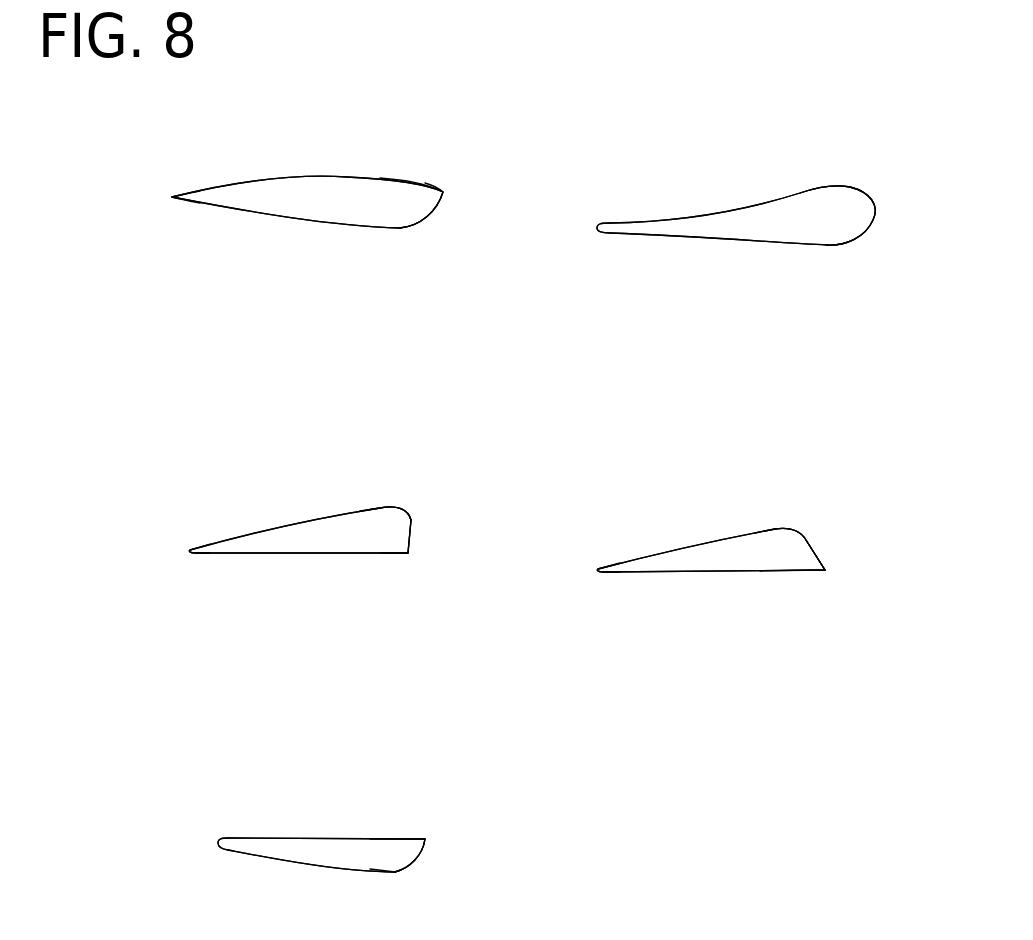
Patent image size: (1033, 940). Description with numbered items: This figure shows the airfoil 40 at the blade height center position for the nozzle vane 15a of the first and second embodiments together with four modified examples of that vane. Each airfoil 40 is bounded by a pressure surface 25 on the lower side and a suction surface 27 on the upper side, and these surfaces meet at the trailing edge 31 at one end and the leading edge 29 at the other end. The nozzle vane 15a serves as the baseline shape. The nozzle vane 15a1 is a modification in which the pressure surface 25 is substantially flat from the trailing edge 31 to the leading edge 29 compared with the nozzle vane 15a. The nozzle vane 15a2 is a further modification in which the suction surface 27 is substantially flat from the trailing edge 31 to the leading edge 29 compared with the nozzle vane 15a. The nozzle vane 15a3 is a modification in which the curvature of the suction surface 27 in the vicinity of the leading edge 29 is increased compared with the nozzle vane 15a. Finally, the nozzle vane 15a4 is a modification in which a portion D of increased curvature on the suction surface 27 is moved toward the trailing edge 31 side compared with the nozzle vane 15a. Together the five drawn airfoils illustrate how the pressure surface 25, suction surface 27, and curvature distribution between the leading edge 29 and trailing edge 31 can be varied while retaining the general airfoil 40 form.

The nozzle vane 15a is at (222, 166).
The nozzle vane 15a1 is at (217, 500).
The nozzle vane 15a2 is at (246, 794).
The nozzle vane 15a3 is at (652, 178).
The nozzle vane 15a4 is at (623, 518).
The pressure surface 25 is at (318, 222).
The suction surface 27 is at (347, 177).
The leading edge 29 is at (447, 191).
The trailing edge 31 is at (172, 197).
The airfoil 40 is at (395, 192).
The portion with increased curvature D is at (410, 510).